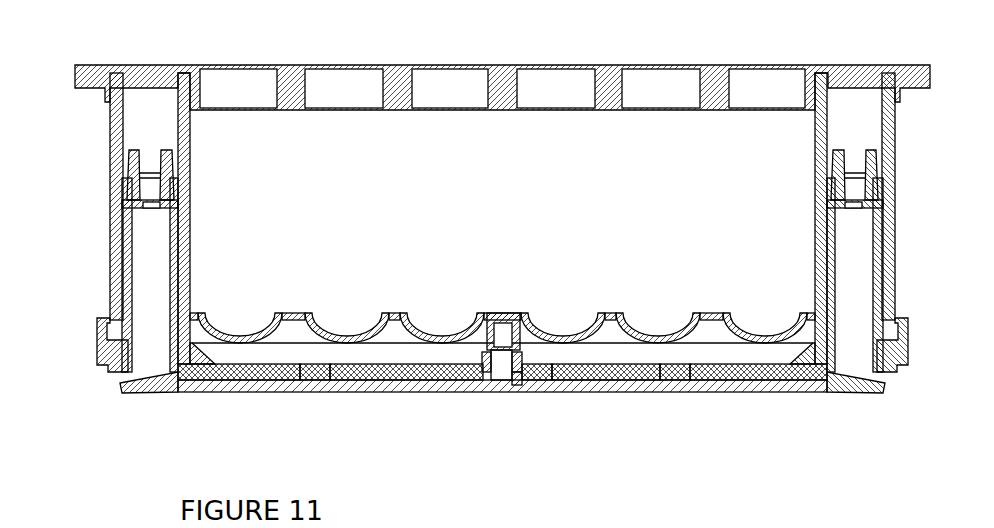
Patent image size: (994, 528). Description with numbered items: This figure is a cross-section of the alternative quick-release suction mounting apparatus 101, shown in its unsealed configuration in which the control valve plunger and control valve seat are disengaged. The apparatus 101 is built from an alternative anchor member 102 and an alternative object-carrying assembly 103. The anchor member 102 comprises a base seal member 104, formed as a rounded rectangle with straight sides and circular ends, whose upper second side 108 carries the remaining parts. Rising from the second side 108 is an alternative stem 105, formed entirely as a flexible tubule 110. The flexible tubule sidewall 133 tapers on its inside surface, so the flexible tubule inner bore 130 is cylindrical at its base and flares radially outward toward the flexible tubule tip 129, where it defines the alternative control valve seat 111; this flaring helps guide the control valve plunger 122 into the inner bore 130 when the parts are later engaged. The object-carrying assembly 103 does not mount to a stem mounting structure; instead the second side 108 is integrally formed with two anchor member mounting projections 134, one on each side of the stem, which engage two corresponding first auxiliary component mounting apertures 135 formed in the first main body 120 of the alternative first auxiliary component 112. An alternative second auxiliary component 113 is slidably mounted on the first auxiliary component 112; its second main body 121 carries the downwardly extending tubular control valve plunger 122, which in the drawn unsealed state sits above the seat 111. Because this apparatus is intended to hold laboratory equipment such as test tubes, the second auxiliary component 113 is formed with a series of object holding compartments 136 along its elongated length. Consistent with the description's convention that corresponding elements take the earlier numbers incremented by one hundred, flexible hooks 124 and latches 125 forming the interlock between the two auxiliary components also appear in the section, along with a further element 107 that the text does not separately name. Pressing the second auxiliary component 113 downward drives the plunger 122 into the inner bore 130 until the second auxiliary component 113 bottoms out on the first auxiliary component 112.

The alternative apparatus 101 is at (110, 385).
The alternative anchor member 102 is at (290, 398).
The alternative object-carrying assembly 103 is at (90, 268).
The base seal member 104 is at (418, 387).
The alternative stem 105 is at (477, 352).
The lower plate 107 is at (623, 382).
The upper second side 108 is at (563, 373).
The alternative flexible tubule 110 is at (540, 347).
The alternative control valve seat 111 is at (488, 340).
The alternative first auxiliary component 112 is at (815, 363).
The alternative second auxiliary component 113 is at (803, 198).
The first main body 120 is at (743, 367).
The second main body 121 is at (285, 315).
The alternative control valve plunger 122 is at (511, 342).
The prong 124 is at (133, 165).
The clip 125 is at (123, 179).
The flexible tubule tip 129 is at (525, 354).
The flexible tubule inner bore 130 is at (488, 340).
The flexible tubule sidewall 133 is at (517, 365).
The anchor member mounting projections 134 is at (312, 373).
The first auxiliary component mounting apertures 135 is at (305, 370).
The object holding compartments 136 is at (238, 91).